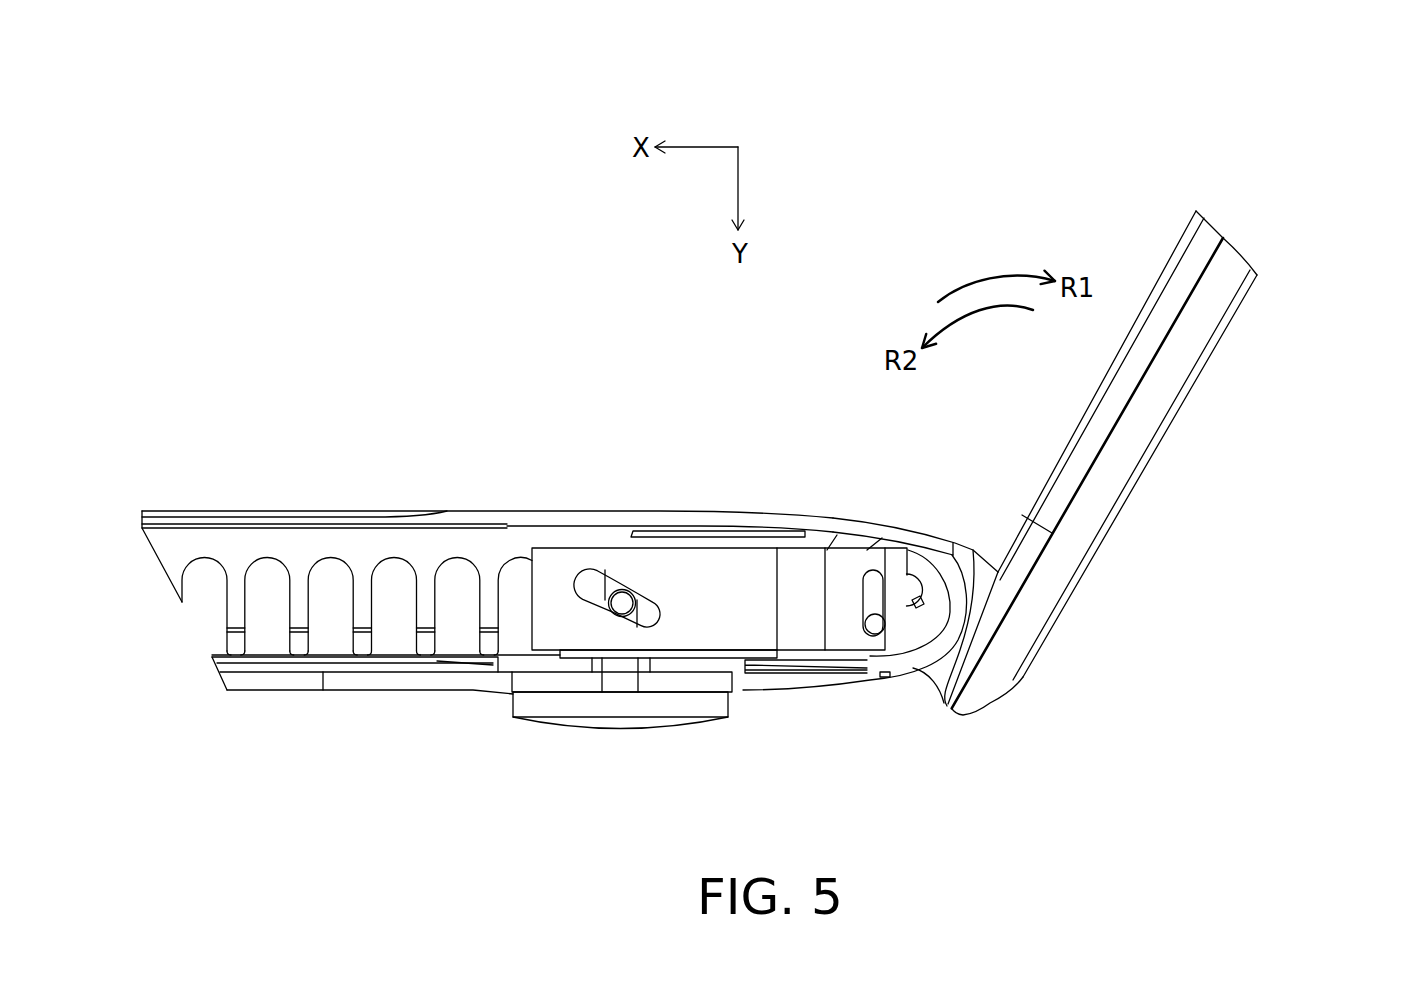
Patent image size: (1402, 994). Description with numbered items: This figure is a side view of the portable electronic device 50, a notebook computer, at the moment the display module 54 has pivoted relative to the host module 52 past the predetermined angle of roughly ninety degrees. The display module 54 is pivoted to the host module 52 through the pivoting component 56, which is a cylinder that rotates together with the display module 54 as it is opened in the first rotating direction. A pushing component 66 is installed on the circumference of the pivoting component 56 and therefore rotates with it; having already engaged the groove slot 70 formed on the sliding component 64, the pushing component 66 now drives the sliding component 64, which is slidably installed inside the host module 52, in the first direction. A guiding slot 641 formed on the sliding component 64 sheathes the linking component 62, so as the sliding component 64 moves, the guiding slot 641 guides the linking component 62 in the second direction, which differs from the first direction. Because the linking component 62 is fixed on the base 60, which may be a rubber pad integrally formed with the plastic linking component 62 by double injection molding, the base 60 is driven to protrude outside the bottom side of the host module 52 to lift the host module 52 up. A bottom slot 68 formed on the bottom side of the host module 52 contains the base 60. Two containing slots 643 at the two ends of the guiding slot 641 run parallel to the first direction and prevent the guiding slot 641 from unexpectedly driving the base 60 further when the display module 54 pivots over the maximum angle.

The portable electronic device 50 is at (1266, 116).
The host module 52 is at (298, 540).
The display module 54 is at (1170, 386).
The pivoting component 56 is at (922, 557).
The base 60 is at (570, 690).
The linking component 62 is at (624, 592).
The sliding component 64 is at (727, 558).
The guiding slot 641 is at (616, 578).
The containing slot 643 is at (590, 585).
The pushing component 66 is at (875, 635).
The bottom slot 68 is at (722, 682).
The groove slot 70 is at (873, 578).